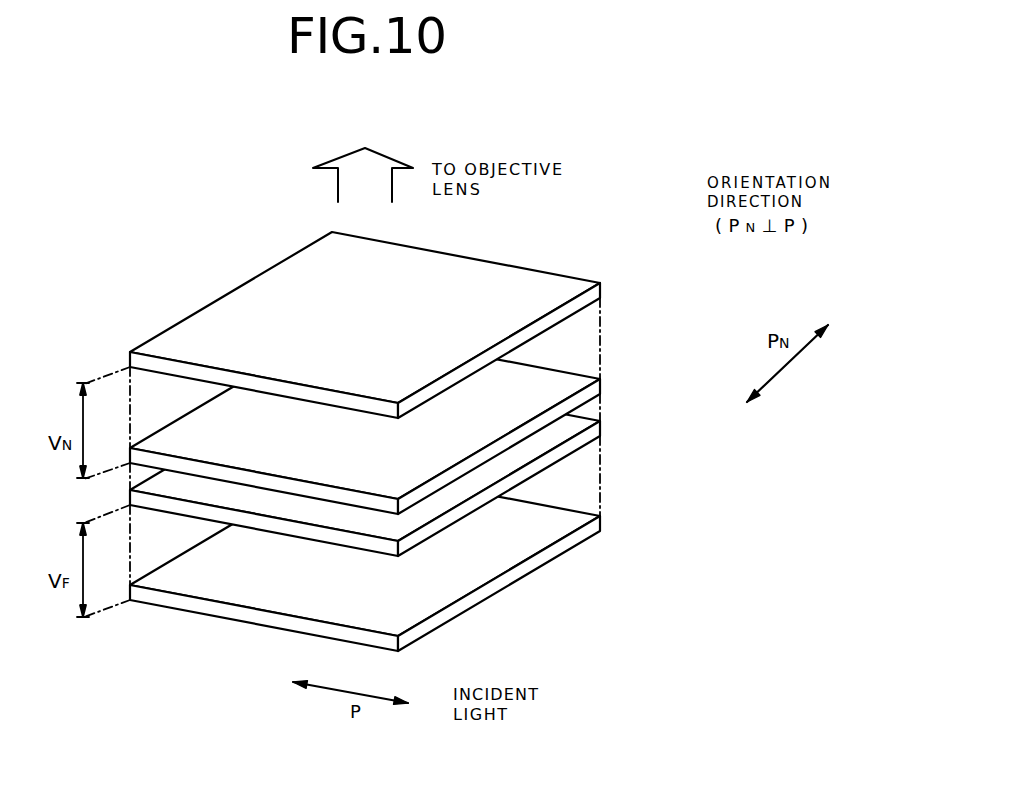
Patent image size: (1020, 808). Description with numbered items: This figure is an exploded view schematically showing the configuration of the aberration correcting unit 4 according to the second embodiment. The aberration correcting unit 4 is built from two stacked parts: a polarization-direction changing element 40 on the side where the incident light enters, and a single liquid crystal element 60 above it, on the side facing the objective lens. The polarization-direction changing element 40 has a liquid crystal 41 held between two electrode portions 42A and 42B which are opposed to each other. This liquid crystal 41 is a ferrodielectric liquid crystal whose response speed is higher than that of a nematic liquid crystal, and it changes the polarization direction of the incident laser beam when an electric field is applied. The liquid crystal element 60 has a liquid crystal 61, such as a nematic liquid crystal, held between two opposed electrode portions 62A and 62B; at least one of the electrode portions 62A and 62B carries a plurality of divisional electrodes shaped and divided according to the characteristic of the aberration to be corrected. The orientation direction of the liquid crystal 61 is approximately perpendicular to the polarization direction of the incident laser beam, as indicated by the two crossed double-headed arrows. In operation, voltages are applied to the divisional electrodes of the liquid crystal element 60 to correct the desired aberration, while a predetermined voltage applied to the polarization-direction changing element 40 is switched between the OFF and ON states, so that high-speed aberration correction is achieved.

The aberration correcting unit 4 is at (215, 260).
The polarization-direction changing element 40 is at (432, 510).
The liquid crystal 41 is at (603, 481).
The electrode portion 42A is at (603, 525).
The electrode portion 42B is at (603, 434).
The liquid crystal element 60 is at (432, 373).
The liquid crystal 61 is at (603, 341).
The electrode portion 62A is at (603, 384).
The electrode portion 62B is at (603, 291).